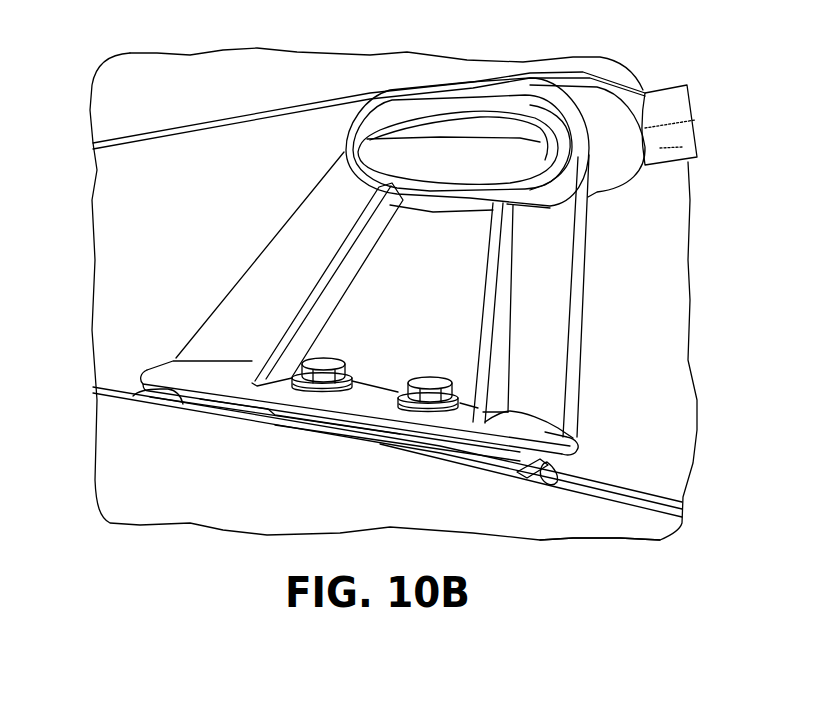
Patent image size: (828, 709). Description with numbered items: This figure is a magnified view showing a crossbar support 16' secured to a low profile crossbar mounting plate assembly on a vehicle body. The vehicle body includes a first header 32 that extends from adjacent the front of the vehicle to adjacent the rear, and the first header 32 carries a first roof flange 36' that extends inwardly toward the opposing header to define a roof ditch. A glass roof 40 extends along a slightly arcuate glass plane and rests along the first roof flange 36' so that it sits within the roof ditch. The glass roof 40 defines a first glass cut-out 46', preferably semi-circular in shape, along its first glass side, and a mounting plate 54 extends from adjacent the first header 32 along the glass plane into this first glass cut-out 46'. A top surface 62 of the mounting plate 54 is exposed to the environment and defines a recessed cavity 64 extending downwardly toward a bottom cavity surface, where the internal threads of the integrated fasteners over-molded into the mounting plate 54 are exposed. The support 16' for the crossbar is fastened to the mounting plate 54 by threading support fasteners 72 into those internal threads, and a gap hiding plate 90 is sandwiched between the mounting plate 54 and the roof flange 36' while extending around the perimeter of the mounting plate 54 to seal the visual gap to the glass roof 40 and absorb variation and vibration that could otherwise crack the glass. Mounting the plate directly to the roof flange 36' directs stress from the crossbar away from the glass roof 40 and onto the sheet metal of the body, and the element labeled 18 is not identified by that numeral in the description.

The end cap 18 is at (650, 103).
The support 16' is at (465, 258).
The glass roof 40 is at (627, 373).
The gap hiding plate 90 is at (540, 477).
The first roof flange 36' is at (425, 452).
The first header 32 is at (570, 513).
The support fastener 72 is at (328, 360).
The top surface 62 is at (447, 447).
The recessed cavity 64 is at (295, 415).
The mounting plate 54 is at (215, 403).
The first glass cut-out 46' is at (156, 442).